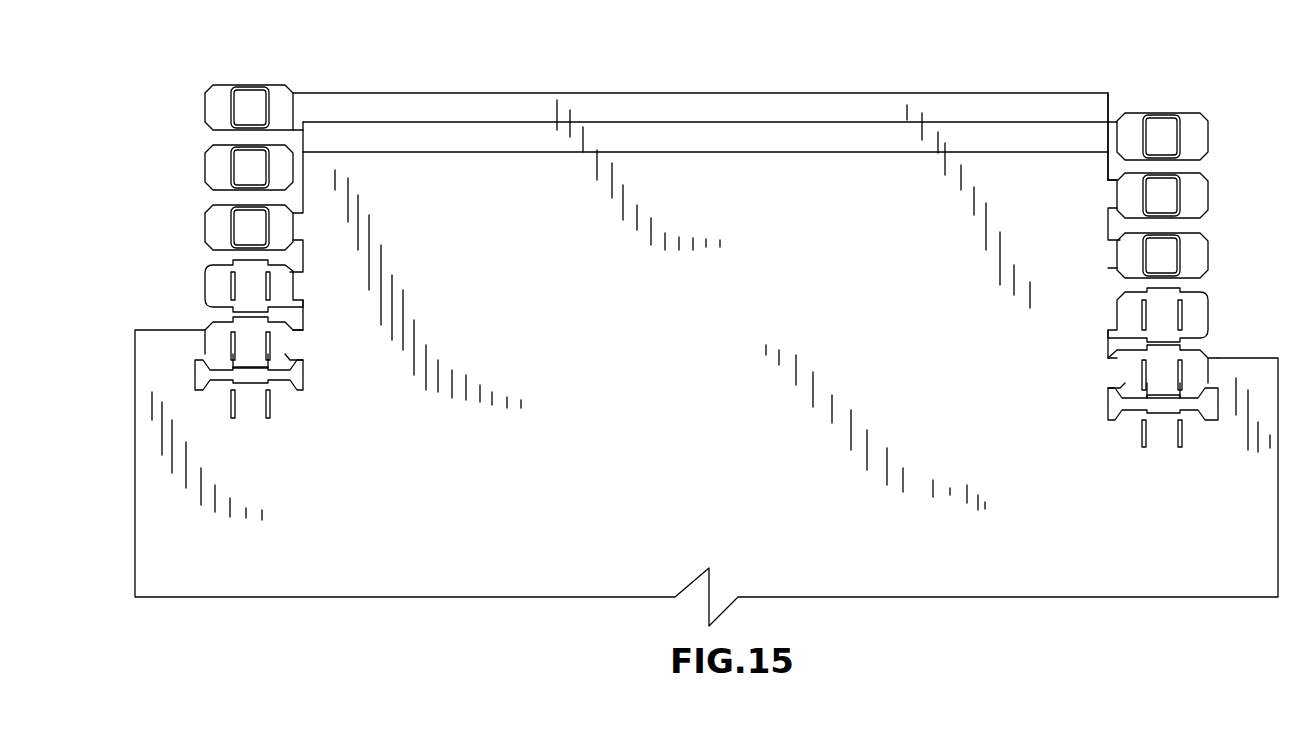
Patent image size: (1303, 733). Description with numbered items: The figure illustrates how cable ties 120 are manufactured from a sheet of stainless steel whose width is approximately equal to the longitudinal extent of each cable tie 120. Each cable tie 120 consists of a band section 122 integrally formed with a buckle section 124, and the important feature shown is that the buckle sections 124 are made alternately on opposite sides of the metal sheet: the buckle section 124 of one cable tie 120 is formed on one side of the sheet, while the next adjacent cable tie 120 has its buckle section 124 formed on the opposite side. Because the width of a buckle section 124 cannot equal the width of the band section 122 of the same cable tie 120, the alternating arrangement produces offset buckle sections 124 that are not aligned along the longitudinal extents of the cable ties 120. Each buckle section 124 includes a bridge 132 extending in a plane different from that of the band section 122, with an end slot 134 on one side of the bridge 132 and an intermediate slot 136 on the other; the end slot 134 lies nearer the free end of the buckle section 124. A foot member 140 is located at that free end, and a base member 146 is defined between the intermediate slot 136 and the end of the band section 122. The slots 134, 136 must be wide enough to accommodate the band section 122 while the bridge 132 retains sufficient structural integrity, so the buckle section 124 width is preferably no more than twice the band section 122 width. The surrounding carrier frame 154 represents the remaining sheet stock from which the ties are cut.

The cable tie 120 is at (655, 93).
The band section 122 is at (642, 102).
The buckle section 124 is at (263, 87).
The bridge 132 is at (247, 97).
The end slot 134 is at (233, 418).
The intermediate slot 136 is at (268, 418).
The foot member 140 is at (213, 105).
The base member 146 is at (275, 110).
The carrier frame 154 is at (217, 580).